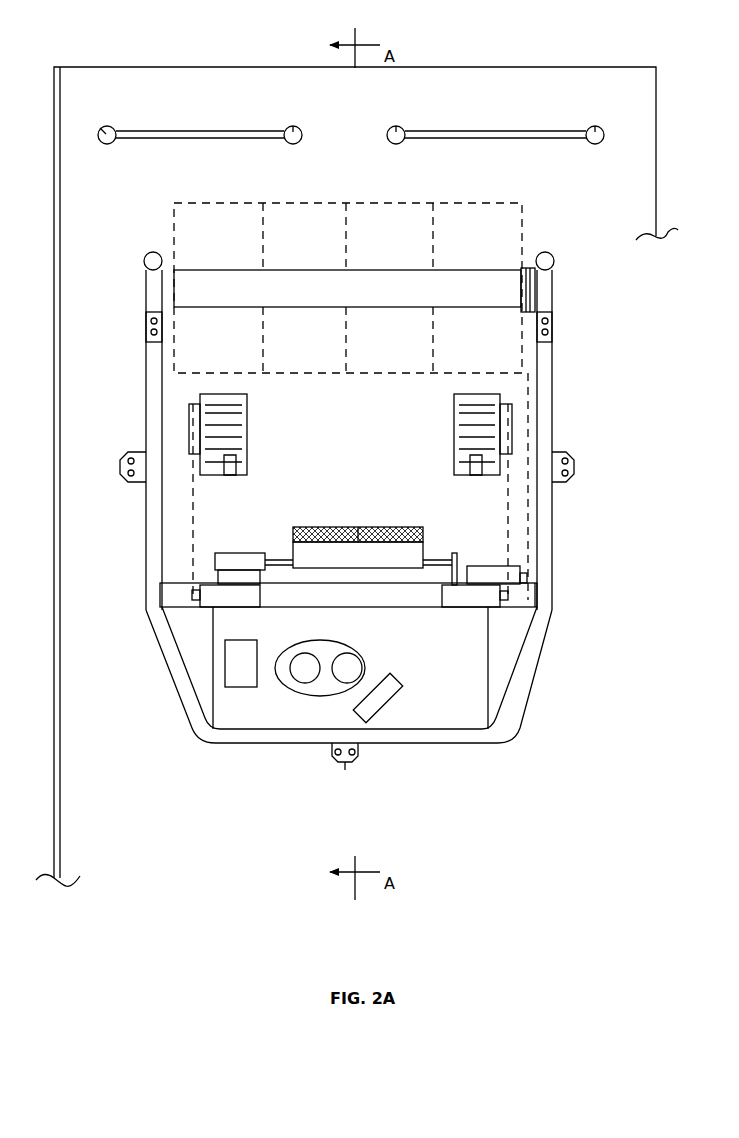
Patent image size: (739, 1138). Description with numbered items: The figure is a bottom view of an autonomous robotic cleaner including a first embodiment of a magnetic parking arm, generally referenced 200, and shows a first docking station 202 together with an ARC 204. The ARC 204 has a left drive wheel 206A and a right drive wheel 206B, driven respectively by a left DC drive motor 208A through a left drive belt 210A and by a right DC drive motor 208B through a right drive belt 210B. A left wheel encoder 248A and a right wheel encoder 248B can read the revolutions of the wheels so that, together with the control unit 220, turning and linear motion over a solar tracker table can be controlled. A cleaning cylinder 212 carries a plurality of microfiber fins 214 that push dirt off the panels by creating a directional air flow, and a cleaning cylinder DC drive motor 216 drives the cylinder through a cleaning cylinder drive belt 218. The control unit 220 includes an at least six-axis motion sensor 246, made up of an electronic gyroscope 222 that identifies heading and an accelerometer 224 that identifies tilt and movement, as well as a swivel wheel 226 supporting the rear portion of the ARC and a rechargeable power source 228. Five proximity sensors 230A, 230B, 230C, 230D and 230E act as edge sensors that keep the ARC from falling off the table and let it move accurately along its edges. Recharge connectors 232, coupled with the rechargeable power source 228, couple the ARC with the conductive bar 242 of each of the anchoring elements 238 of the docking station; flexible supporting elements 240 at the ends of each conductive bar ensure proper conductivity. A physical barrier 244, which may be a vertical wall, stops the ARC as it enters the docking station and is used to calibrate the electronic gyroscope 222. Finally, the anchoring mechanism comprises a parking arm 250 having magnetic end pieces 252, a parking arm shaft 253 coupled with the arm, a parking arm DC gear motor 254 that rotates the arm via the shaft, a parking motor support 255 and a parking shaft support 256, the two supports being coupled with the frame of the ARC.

The autonomous robotic cleaner with magnetic parking arm 200 is at (192, 950).
The first docking station 202 is at (135, 83).
The ARC 204 is at (142, 586).
The left drive wheel 206A is at (250, 441).
The right drive wheel 206B is at (452, 441).
The left DC drive motor 208A is at (215, 617).
The right DC drive motor 208B is at (472, 612).
The left drive belt 210A is at (196, 528).
The right drive belt 210B is at (505, 515).
The cleaning cylinder 212 is at (318, 290).
The microfiber fins 214 is at (387, 225).
The cleaning cylinder DC drive motor 216 is at (536, 590).
The cleaning cylinder drive belt 218 is at (532, 395).
The control unit 220 is at (232, 722).
The electronic gyroscope 222 is at (303, 670).
The accelerometer 224 is at (345, 670).
The swivel wheel 226 is at (384, 696).
The rechargeable power source 228 is at (230, 668).
The proximity sensor 230A is at (148, 326).
The proximity sensor 230B is at (124, 462).
The proximity sensor 230C is at (345, 770).
The proximity sensor 230D is at (576, 470).
The proximity sensor 230E is at (553, 326).
The recharge connectors 232 is at (150, 256).
The anchoring elements 238 is at (251, 124).
The supporting elements 240 is at (104, 128).
The conductive bar 242 is at (192, 128).
The physical barrier 244 is at (55, 705).
The at least 6-axis motion sensor 246 is at (316, 640).
The left wheel encoder 248A is at (225, 468).
The right wheel encoder 248B is at (478, 468).
The parking arm 250 is at (332, 590).
The magnetic end pieces 252 is at (335, 527).
The parking arm shaft 253 is at (437, 563).
The parking arm DC gear motor 254 is at (215, 560).
The parking motor support 255 is at (220, 578).
The parking shaft support 256 is at (472, 608).